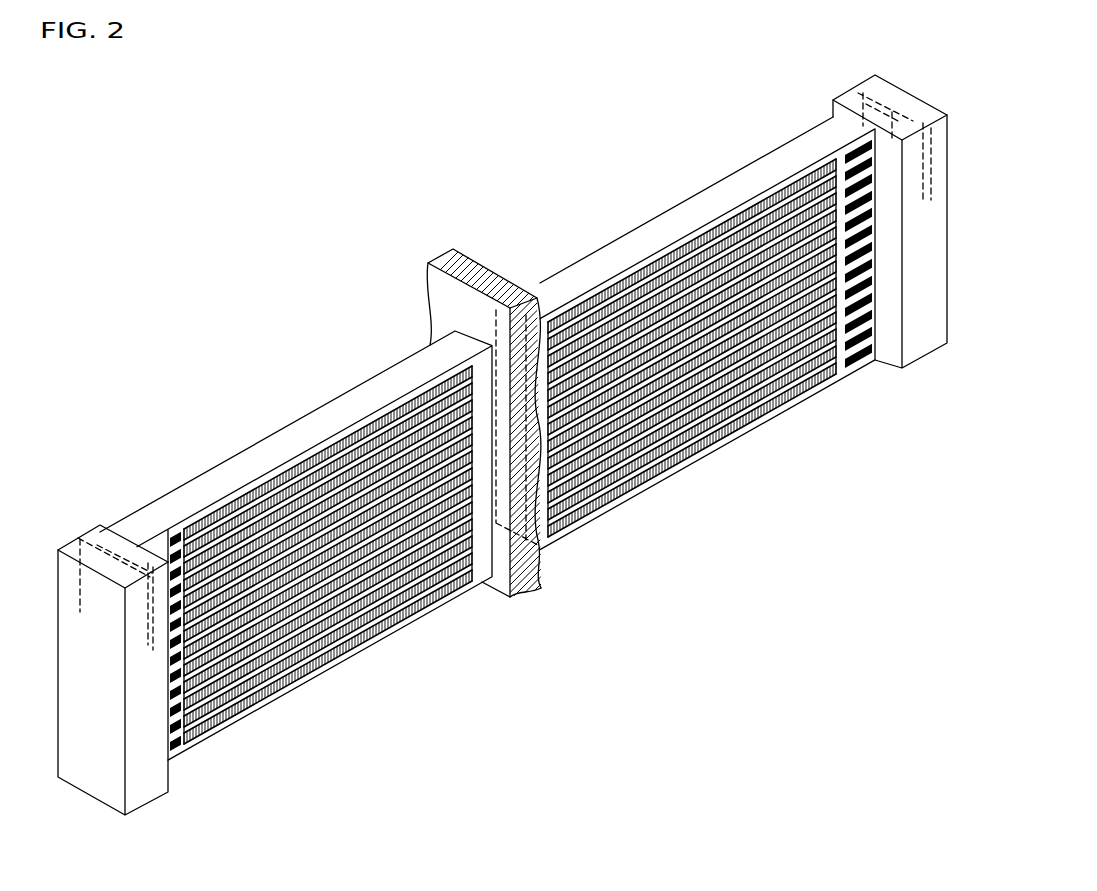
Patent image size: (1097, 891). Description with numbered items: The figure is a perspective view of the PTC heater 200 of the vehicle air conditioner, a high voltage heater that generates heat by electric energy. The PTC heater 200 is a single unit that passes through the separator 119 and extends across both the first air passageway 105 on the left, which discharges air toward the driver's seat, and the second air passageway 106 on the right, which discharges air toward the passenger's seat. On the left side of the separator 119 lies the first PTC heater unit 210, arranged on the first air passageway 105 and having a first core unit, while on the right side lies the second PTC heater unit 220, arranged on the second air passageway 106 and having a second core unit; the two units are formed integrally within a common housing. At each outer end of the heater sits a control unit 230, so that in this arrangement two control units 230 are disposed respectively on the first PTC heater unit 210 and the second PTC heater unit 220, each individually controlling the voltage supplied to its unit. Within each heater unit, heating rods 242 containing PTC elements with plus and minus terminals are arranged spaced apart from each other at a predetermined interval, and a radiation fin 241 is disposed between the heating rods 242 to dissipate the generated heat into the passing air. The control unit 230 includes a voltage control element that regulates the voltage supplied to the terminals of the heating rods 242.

The first air passageway 105 is at (290, 389).
The second air passageway 106 is at (690, 153).
The separator 119 is at (481, 283).
The PTC heater 200 is at (525, 450).
The first PTC heater unit 210 is at (413, 645).
The second PTC heater unit 220 is at (789, 424).
The control unit 230 is at (140, 788).
The radiation fin 241 is at (267, 676).
The heating rod 242 is at (223, 692).